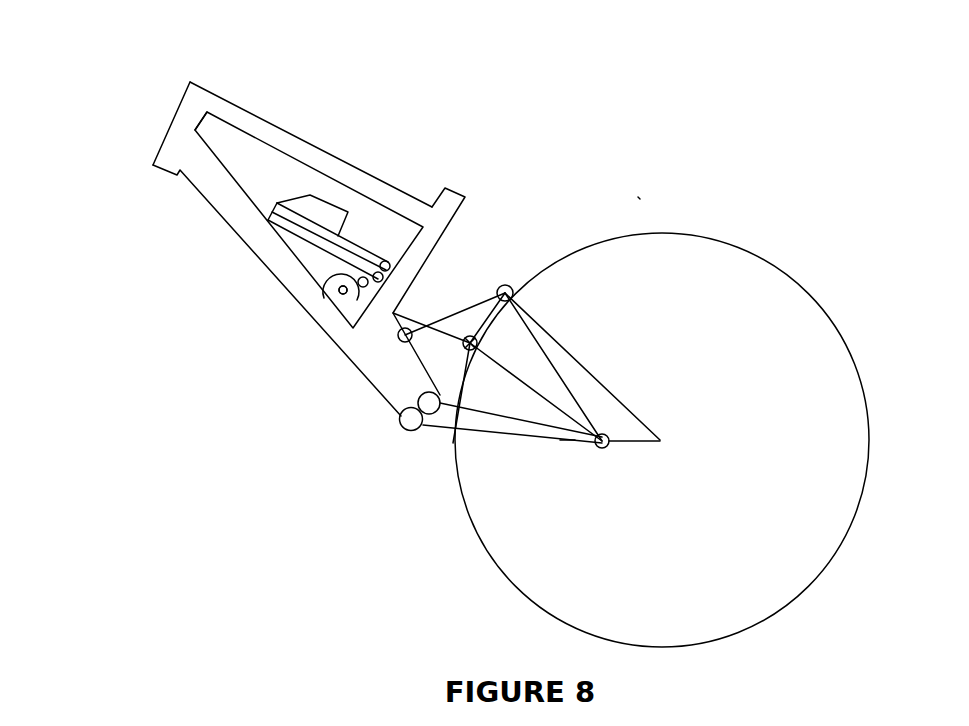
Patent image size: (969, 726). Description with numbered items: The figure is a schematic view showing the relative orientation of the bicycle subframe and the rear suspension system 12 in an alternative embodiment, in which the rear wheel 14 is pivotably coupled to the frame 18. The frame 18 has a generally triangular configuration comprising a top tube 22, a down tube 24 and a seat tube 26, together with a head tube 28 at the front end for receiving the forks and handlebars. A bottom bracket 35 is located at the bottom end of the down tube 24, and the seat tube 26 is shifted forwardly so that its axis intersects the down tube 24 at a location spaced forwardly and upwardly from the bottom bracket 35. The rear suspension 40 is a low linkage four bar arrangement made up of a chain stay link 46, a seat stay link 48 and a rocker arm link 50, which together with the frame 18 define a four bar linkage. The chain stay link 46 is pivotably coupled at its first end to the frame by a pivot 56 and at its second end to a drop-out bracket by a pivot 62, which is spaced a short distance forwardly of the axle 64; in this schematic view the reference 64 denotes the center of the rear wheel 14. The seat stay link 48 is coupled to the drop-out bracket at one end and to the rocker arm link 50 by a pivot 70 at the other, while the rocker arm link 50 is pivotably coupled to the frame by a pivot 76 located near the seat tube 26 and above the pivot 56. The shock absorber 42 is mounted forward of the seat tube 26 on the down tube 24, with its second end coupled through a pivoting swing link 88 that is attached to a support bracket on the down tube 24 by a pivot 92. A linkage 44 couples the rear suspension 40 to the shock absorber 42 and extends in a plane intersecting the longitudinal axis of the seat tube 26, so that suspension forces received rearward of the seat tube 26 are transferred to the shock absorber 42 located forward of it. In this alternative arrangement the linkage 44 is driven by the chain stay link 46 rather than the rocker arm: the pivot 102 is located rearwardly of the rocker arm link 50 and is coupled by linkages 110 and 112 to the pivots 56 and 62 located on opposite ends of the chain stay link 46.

The rear suspension system 12 is at (640, 197).
The rear wheel 14 is at (843, 310).
The frame 18 is at (345, 127).
The top tube 22 is at (273, 133).
The down tube 24 is at (227, 200).
The seat tube 26 is at (457, 204).
The head tube 28 is at (188, 120).
The bottom bracket 35 is at (402, 431).
The rear suspension 40 is at (568, 455).
The shock absorber 42 is at (318, 247).
The linkage 44 is at (436, 318).
The chain stay link 46 is at (489, 428).
The seat stay link 48 is at (563, 359).
The rocker arm link 50 is at (364, 268).
The pivot 56 is at (434, 415).
The pivot 62 is at (607, 449).
The axle 64 is at (661, 441).
The pivot 70 is at (511, 283).
The pivot 76 is at (398, 338).
The pivoting swing link 88 is at (333, 297).
The pivot 92 is at (314, 303).
The pivot 102 is at (478, 338).
The linkage 110 is at (450, 373).
The linkage 112 is at (542, 398).